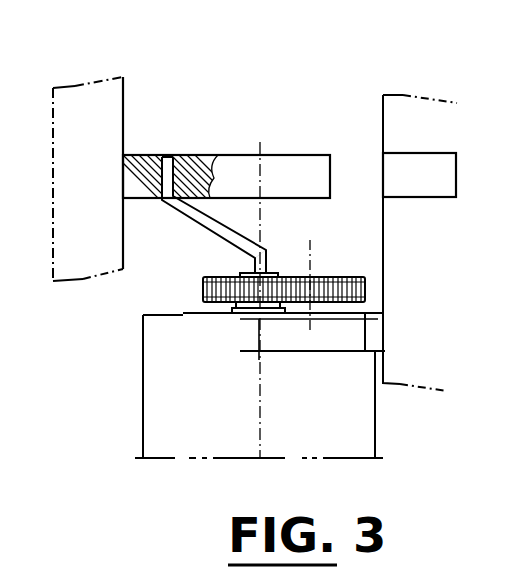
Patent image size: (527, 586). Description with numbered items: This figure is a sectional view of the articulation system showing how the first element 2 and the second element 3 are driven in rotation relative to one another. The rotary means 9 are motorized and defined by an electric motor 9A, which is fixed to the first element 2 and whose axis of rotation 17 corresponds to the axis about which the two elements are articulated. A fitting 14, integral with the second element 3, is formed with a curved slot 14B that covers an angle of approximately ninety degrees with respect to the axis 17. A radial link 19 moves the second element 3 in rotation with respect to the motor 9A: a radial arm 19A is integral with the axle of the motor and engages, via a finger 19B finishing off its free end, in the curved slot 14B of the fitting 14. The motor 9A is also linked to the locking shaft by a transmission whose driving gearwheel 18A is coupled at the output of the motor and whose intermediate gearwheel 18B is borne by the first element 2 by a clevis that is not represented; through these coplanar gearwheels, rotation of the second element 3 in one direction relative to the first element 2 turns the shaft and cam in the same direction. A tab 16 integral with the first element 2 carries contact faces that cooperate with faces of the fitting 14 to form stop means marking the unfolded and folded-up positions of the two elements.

The first element 2 is at (405, 102).
The second element 3 is at (105, 92).
The rotary means 9 is at (128, 363).
The electric motor 9A is at (173, 460).
The fitting 14 is at (299, 163).
The curved slot 14B is at (210, 168).
The tab 16 is at (407, 183).
The axis 17 is at (262, 437).
The driving gearwheel 18A is at (203, 290).
The intermediate gearwheel 18B is at (327, 276).
The radial link 19 is at (195, 238).
The radial arm 19A is at (242, 243).
The finger 19B is at (163, 158).